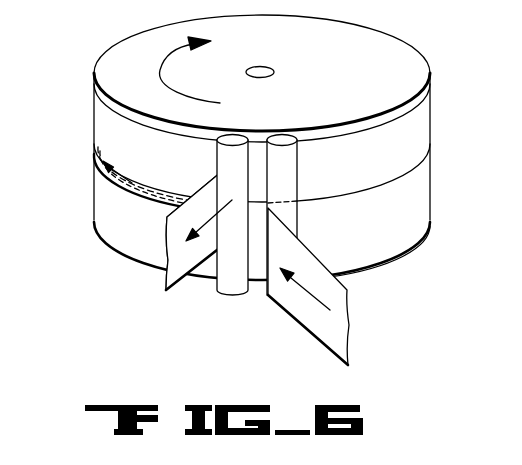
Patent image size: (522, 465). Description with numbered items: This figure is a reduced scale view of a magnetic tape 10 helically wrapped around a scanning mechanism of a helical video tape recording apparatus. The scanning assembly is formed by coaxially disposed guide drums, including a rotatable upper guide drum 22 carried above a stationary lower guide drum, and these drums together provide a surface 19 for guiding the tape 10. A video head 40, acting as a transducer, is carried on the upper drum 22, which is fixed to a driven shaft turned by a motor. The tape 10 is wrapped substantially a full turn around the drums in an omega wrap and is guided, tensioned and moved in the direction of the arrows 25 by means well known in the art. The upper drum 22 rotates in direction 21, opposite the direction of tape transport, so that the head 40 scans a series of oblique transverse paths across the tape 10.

The magnetic tape 10 is at (257, 190).
The surface 19 is at (100, 98).
The direction of rotation 21 is at (160, 77).
The rotatable upper guide drum 22 is at (402, 47).
The arrows 25 is at (205, 223).
The video head 40 is at (146, 188).